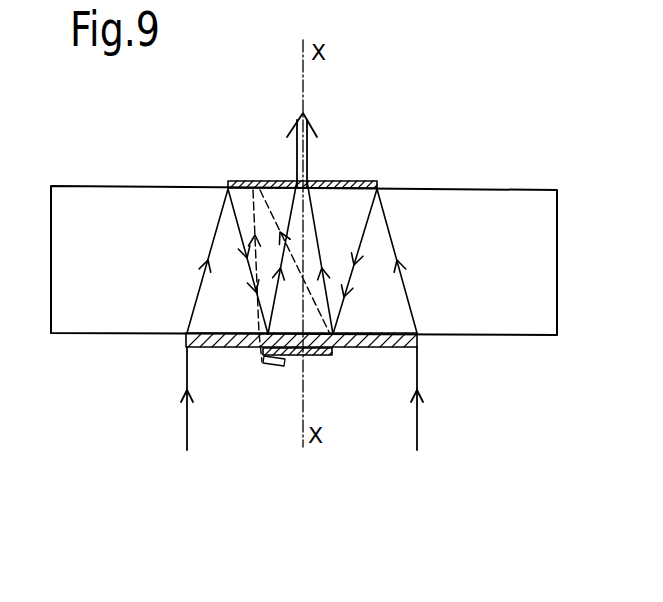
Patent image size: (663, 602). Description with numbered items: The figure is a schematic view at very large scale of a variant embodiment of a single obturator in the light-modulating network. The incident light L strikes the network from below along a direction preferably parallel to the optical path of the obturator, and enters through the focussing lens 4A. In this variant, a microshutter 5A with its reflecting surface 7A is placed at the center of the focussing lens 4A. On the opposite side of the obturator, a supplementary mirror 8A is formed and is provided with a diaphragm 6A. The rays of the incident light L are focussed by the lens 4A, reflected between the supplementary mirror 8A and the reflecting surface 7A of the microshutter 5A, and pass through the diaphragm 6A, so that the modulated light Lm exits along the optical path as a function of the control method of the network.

The focussing lens 4A is at (367, 348).
The microshutter 5A is at (306, 352).
The diaphragm 6A is at (296, 180).
The reflecting surface 7A is at (282, 362).
The supplementary mirror 8A is at (357, 181).
The modulated light Lm is at (306, 152).
The incident light L is at (212, 456).